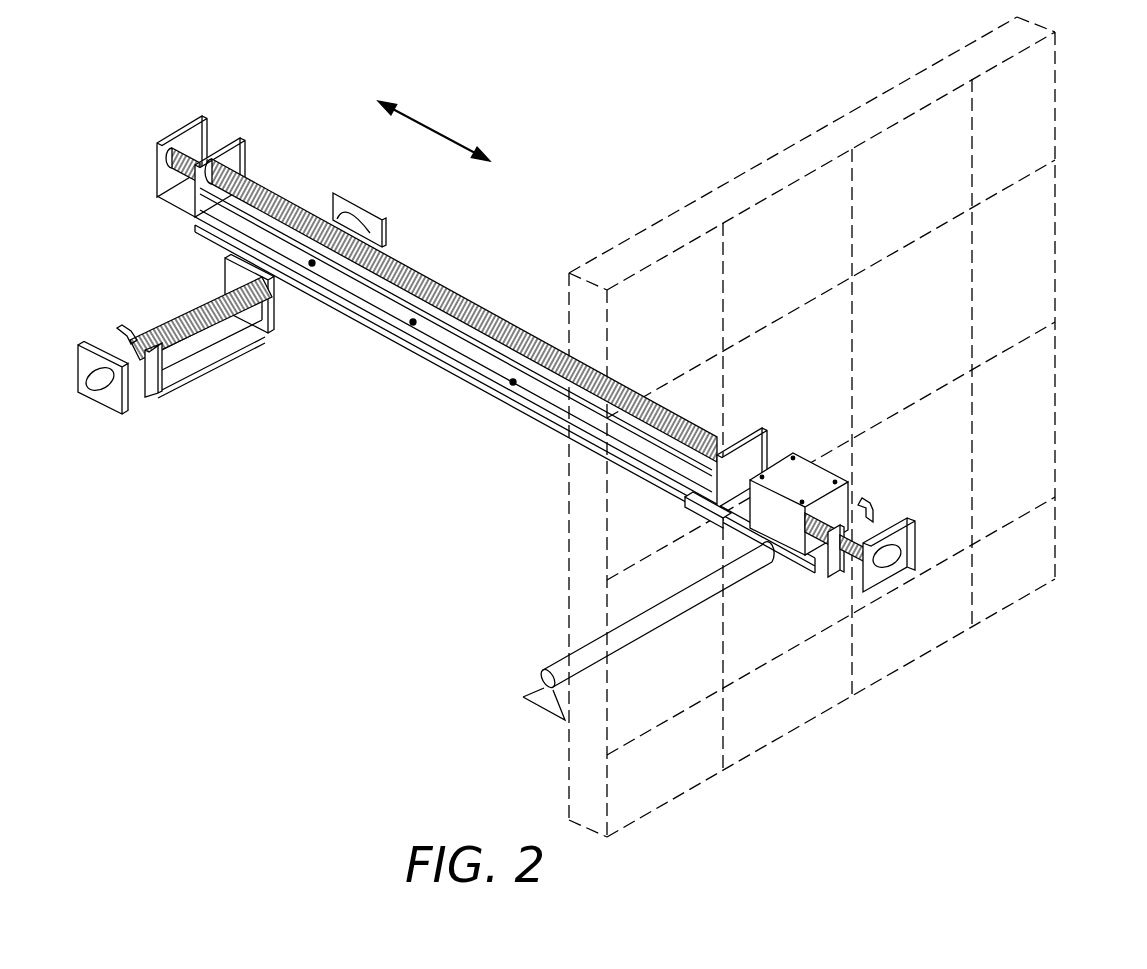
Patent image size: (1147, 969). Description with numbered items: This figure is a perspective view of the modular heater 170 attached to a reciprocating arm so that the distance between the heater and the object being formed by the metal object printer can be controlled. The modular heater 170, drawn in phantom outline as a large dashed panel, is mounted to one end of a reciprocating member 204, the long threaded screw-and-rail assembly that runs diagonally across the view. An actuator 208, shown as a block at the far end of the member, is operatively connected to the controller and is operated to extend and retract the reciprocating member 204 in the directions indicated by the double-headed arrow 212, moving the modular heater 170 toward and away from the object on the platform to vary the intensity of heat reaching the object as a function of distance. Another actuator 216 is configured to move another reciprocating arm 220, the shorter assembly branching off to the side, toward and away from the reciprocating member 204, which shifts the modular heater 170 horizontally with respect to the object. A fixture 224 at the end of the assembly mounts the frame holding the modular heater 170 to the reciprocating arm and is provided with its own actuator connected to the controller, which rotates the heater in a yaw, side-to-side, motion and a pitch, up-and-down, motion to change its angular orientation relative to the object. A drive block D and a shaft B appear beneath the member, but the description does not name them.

The modular heater 170 is at (1057, 183).
The reciprocating member 204 is at (452, 283).
The actuator 208 is at (798, 463).
The double-headed arrow 212 is at (435, 125).
The actuator 216 is at (311, 268).
The reciprocating arm 220 is at (188, 308).
The fixture 224 is at (903, 510).
The drive block D is at (697, 512).
The shaft B is at (730, 575).